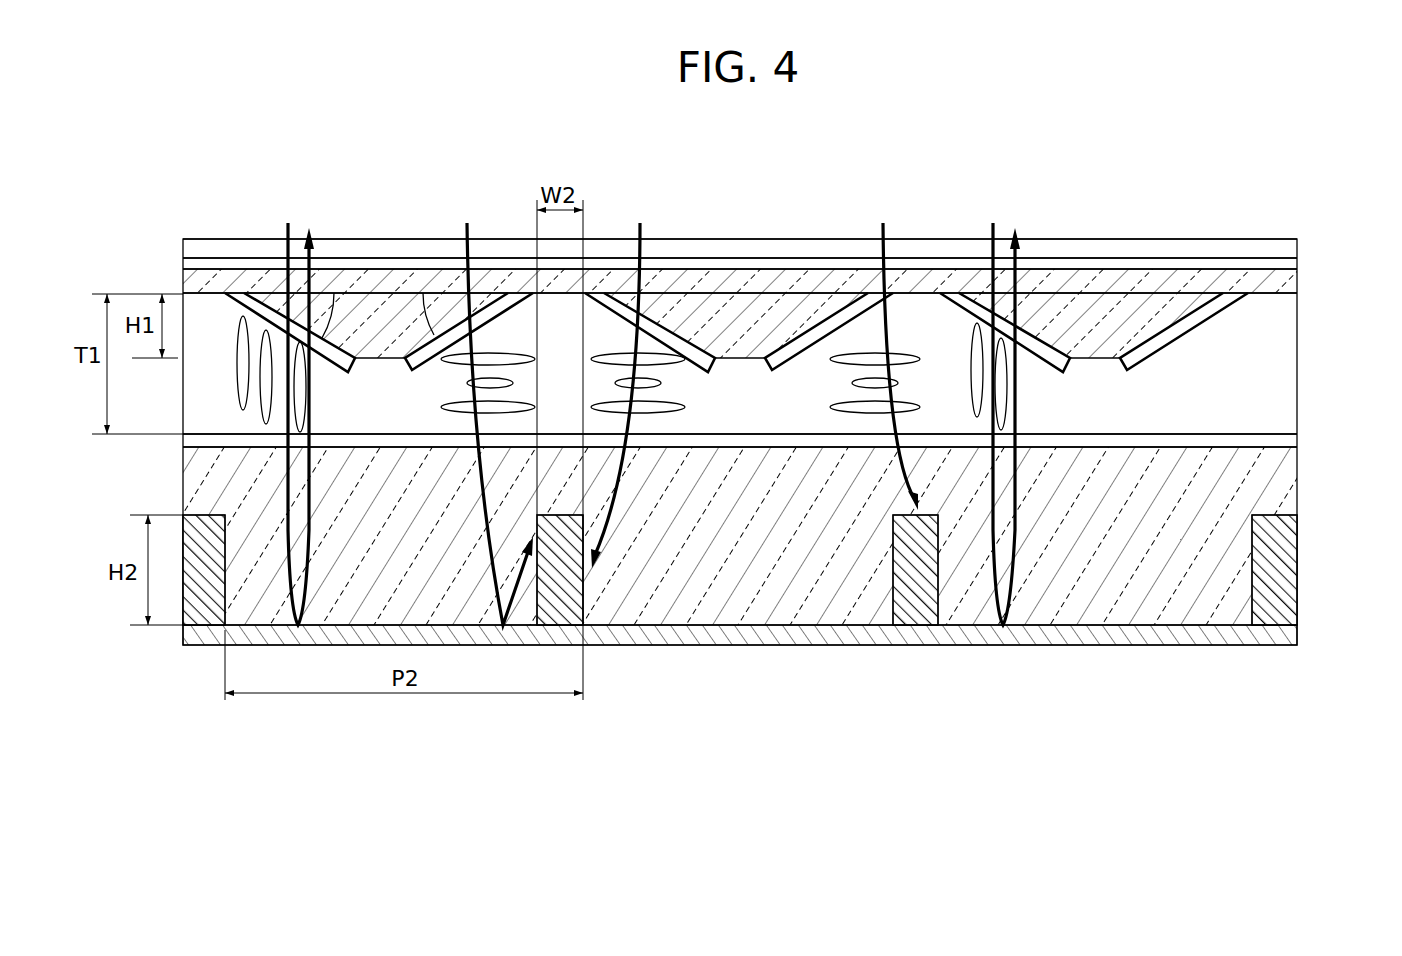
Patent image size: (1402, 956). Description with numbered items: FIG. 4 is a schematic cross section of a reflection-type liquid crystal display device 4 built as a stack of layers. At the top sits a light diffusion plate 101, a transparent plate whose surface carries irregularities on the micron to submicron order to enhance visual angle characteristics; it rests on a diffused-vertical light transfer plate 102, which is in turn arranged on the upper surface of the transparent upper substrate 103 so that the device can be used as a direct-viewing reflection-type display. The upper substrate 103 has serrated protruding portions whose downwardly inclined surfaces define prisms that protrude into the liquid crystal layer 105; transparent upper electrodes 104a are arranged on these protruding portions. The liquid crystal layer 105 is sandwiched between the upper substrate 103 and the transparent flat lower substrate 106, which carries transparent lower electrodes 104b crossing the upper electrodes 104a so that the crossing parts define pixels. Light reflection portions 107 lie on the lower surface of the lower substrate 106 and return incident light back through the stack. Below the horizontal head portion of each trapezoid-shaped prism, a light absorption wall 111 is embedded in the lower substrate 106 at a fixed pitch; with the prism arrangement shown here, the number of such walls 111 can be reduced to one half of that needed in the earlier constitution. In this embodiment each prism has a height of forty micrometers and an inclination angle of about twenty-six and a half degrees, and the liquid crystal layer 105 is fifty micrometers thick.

The liquid crystal display panel 4 is at (724, 215).
The light diffusion plate 101 is at (1282, 246).
The diffused-vertical light transfer plate 102 is at (1282, 258).
The upper substrate 103 is at (1282, 276).
The upper electrodes 104a is at (1208, 310).
The lower electrodes 104b is at (1282, 436).
The liquid crystal layer 105 is at (1282, 400).
The lower substrate 106 is at (1282, 494).
The light reflection portions 107 is at (695, 645).
The light absorption wall 111 is at (923, 600).